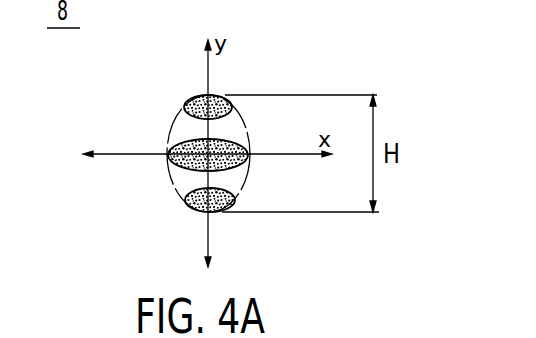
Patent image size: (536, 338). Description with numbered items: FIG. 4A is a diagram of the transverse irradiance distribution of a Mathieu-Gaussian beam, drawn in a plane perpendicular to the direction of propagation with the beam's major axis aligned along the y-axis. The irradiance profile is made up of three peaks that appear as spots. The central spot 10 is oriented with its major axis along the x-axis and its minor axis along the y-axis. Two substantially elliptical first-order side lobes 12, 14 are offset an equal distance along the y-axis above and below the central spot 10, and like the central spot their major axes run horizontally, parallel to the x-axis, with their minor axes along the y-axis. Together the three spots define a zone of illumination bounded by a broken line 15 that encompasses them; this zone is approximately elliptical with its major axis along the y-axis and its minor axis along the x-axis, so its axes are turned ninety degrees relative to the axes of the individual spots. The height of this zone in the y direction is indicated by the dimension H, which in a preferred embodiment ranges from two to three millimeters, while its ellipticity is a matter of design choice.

The central spot 10 is at (185, 160).
The first-order side lobe 12 is at (193, 100).
The first-order side lobe 14 is at (192, 202).
The broken line 15 is at (244, 117).